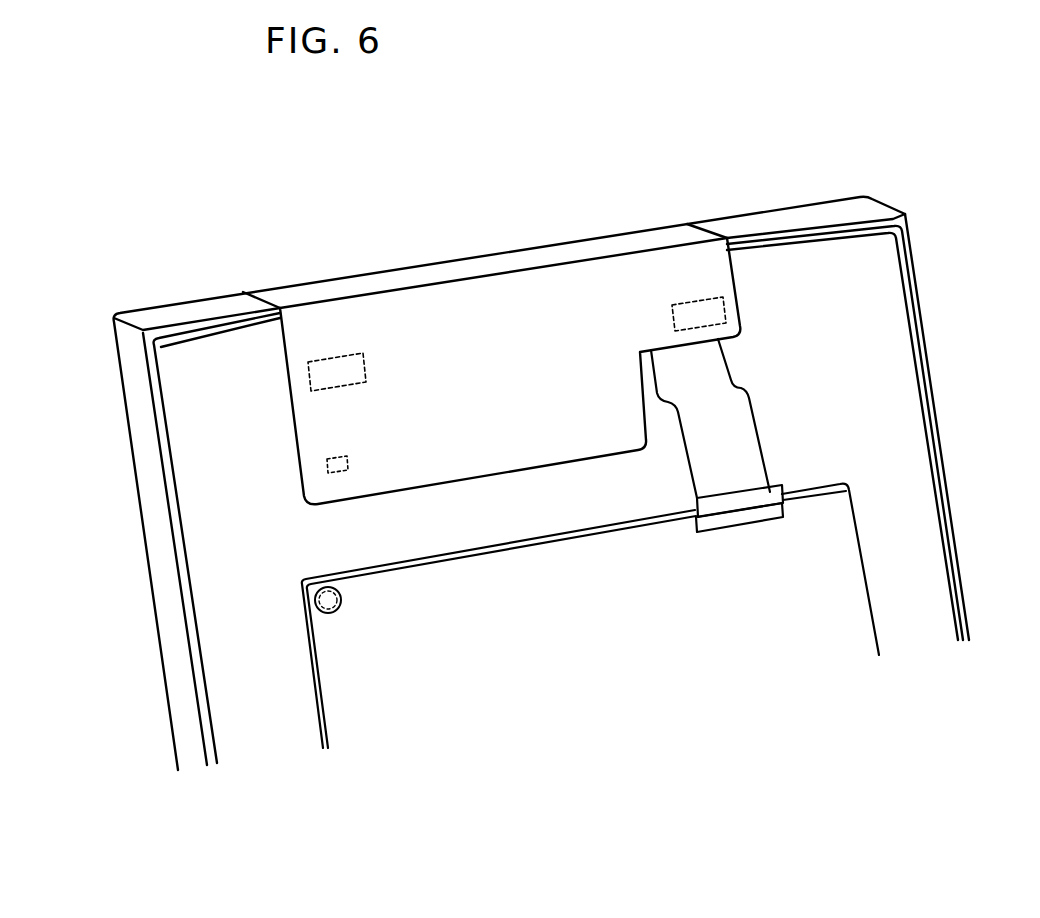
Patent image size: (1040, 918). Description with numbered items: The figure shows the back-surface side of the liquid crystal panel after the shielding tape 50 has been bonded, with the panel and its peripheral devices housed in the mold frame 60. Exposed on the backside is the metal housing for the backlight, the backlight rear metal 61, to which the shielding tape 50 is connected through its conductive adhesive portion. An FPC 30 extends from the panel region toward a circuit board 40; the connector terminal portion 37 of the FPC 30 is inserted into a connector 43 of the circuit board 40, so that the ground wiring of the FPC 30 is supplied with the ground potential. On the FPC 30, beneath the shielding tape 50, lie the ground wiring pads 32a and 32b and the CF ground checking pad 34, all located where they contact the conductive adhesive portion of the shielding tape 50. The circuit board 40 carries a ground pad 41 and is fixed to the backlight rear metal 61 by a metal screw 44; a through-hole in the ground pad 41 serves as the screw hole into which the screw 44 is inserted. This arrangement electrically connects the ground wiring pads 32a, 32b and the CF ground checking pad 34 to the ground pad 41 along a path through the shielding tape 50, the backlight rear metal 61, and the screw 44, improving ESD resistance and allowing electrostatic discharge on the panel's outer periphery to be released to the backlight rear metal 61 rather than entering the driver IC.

The FPC 30 is at (740, 412).
The ground wiring pad 32a is at (333, 353).
The ground wiring pad 32b is at (697, 297).
The CF ground checking pad 34 is at (327, 467).
The connector terminal portion 37 is at (773, 488).
The circuit board 40 is at (843, 588).
The ground pad 41 is at (307, 593).
The connector 43 is at (787, 508).
The screw 44 is at (307, 612).
The shielding tape 50 is at (463, 263).
The mold frame 60 is at (783, 220).
The backlight rear metal 61 is at (210, 532).